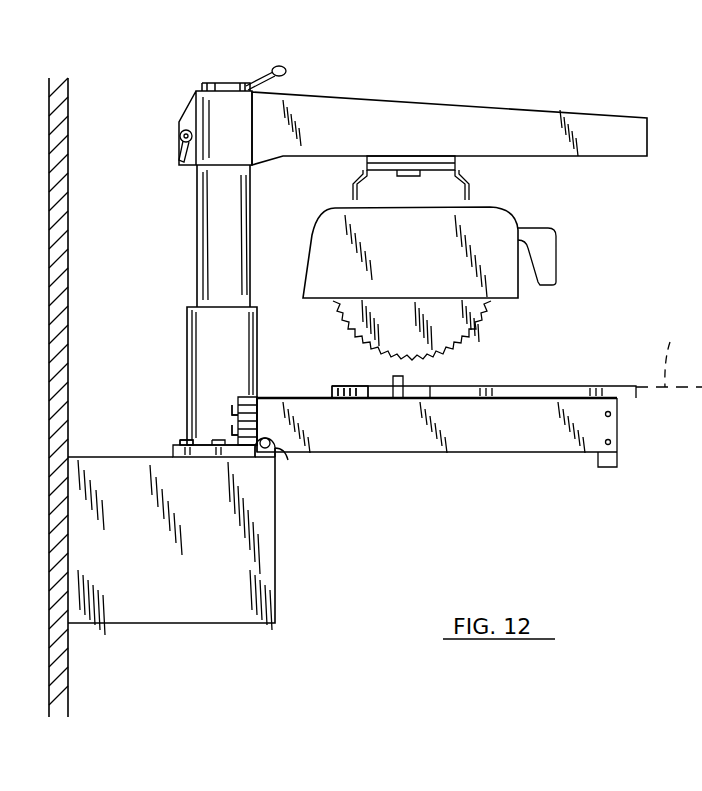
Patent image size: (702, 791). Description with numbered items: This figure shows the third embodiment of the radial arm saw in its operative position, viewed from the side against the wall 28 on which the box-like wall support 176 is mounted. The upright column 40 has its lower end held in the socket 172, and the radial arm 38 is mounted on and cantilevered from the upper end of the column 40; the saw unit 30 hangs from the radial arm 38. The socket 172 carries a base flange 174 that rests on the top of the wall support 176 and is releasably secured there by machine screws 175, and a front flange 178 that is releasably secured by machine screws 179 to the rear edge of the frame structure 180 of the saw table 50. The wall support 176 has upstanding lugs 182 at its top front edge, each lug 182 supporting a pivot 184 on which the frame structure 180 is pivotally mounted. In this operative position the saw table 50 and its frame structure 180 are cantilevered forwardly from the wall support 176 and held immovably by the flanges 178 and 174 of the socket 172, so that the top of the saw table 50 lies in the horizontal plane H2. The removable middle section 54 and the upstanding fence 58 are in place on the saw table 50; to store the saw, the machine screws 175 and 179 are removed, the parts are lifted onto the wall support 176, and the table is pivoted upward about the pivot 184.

The wall 28 is at (70, 222).
The radial arm 38 is at (528, 118).
The column 40 is at (215, 218).
The saw unit 30 is at (485, 217).
The saw table 50 is at (548, 378).
The removable middle section 54 is at (352, 386).
The fence 58 is at (400, 383).
The socket 172 is at (205, 335).
The base flange 174 is at (175, 450).
The machine screws 175 is at (185, 440).
The wall support 176 is at (183, 595).
The front flange 178 is at (248, 420).
The machine screws 179 is at (240, 398).
The frame structure 180 is at (372, 430).
The lugs 182 is at (280, 450).
The pivot 184 is at (262, 452).
The horizontal plane H2 is at (669, 351).